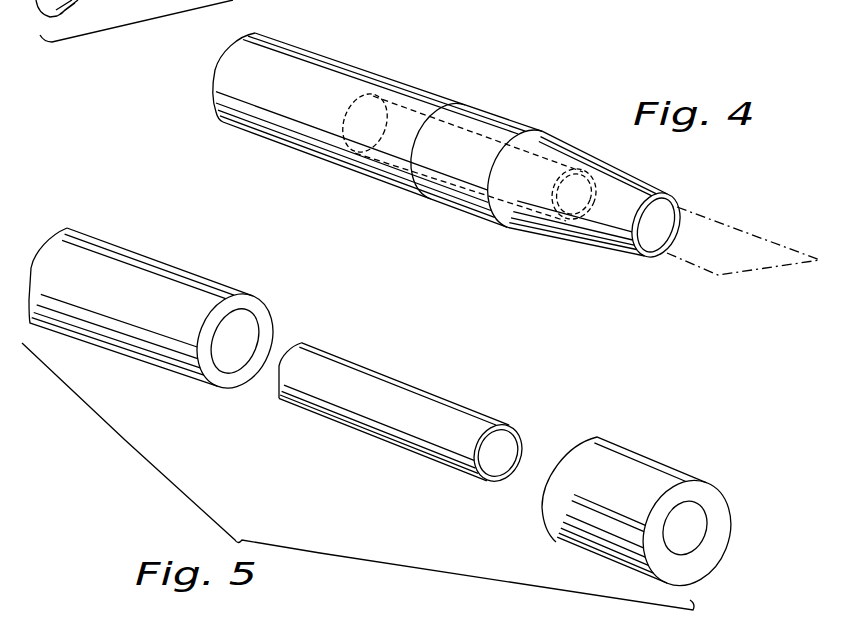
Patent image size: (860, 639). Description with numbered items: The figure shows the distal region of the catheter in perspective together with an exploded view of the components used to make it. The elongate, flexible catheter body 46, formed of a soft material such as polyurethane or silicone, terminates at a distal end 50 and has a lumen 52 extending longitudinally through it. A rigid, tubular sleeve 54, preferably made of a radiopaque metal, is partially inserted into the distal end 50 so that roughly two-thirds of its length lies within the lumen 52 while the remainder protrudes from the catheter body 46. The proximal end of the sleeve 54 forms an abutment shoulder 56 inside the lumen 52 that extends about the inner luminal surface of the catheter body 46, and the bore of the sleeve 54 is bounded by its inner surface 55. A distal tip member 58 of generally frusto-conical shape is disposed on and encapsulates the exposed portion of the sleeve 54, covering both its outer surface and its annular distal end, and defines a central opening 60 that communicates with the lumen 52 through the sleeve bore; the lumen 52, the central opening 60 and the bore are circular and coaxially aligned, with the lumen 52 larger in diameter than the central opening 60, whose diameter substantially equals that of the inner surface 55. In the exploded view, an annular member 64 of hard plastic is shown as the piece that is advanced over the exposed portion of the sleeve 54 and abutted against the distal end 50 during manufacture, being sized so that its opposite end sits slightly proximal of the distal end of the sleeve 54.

In FIG. 4, the catheter body 46 is at (417, 83).
In FIG. 5, the catheter body 46 is at (150, 252).
In FIG. 5, the distal end 50 is at (265, 298).
In FIG. 5, the lumen 52 is at (228, 355).
In FIG. 4, the tubular sleeve 54 is at (489, 129).
In FIG. 5, the tubular sleeve 54 is at (457, 365).
In FIG. 4, the inner surface 55 is at (571, 205).
In FIG. 5, the inner surface 55 is at (510, 440).
In FIG. 4, the abutment shoulder 56 is at (352, 97).
In FIG. 4, the distal tip member 58 is at (590, 157).
In FIG. 4, the central opening 60 is at (677, 203).
In FIG. 5, the annular member 64 is at (638, 475).